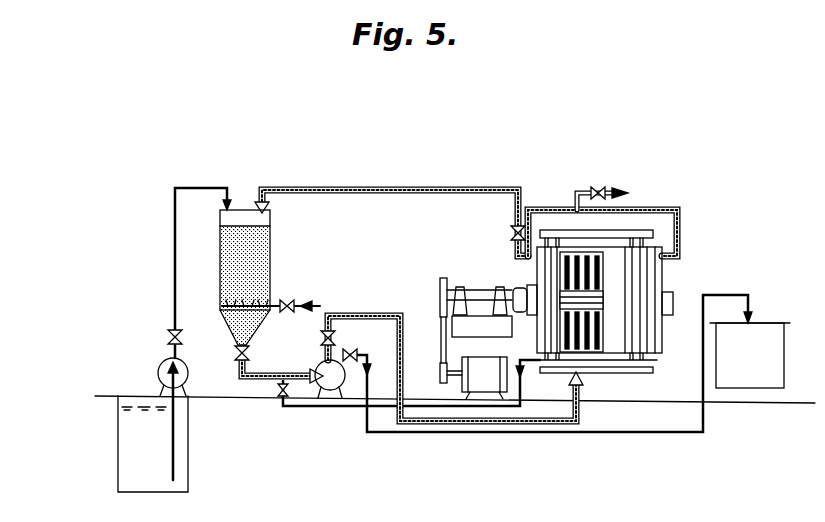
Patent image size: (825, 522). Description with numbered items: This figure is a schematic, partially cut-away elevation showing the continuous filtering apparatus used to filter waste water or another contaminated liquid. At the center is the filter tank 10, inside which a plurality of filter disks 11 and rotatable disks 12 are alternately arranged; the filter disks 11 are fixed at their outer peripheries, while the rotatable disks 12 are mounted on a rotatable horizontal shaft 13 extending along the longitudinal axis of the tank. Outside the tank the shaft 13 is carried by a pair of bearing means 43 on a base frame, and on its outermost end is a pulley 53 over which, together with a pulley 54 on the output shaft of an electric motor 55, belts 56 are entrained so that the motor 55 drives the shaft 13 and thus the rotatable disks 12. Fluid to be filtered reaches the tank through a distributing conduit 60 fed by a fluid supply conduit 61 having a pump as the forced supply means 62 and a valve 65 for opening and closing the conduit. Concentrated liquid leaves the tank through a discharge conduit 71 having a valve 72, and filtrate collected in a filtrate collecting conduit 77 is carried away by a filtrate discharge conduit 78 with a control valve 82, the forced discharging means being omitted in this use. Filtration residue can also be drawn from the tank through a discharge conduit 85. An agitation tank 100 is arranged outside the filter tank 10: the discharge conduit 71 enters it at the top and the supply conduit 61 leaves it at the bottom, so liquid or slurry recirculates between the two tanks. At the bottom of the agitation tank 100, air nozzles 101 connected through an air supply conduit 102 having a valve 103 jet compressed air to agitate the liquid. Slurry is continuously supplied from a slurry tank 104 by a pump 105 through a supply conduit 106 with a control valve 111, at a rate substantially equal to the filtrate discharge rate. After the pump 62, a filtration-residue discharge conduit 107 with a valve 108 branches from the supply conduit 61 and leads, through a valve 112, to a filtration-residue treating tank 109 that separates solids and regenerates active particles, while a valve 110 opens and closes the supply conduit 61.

The filter tank 10 is at (660, 288).
The filter disks 11 is at (598, 290).
The rotatable disks 12 is at (590, 342).
The rotatable horizontal shaft 13 is at (483, 298).
The bearing means 43 is at (457, 290).
The pulley 53 is at (441, 290).
The pulley 54 is at (439, 373).
The electric motor 55 is at (488, 442).
The belts 56 is at (443, 355).
The distributing conduit 60 is at (620, 373).
The fluid supply conduit 61 is at (455, 425).
The forced supply means 62 is at (330, 386).
The valve 65 is at (322, 340).
The discharge conduit 71 is at (425, 188).
The valve 72 is at (513, 232).
The filtrate collecting conduit 77 is at (621, 234).
The filtrate discharge conduit 78 is at (597, 190).
The control valve 82 is at (610, 188).
The discharge conduit 85 is at (347, 407).
The agitation tank 100 is at (271, 243).
The air nozzles 101 is at (232, 322).
The air supply conduit 102 is at (275, 303).
The valve 103 is at (310, 305).
The slurry tank 104 is at (135, 446).
The pump 105 is at (165, 368).
The supply conduit 106 is at (175, 235).
The filtration-residue discharge conduit 107 is at (603, 434).
The valve 108 is at (348, 354).
The filtration-residue treating tank 109 is at (777, 368).
The valve 110 is at (238, 355).
The control valve 111 is at (172, 333).
The valve 112 is at (280, 397).